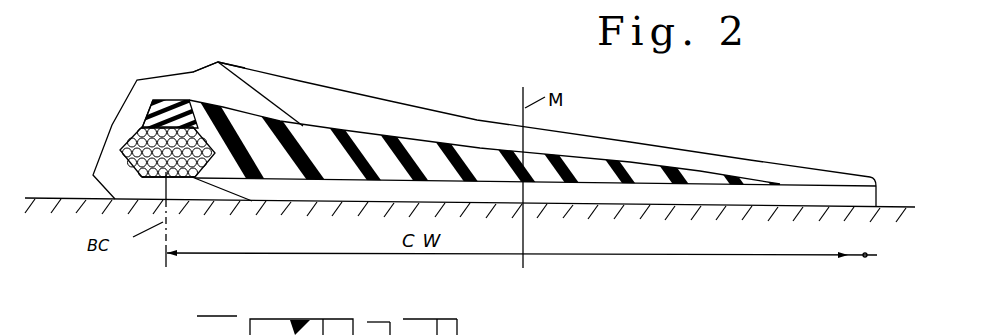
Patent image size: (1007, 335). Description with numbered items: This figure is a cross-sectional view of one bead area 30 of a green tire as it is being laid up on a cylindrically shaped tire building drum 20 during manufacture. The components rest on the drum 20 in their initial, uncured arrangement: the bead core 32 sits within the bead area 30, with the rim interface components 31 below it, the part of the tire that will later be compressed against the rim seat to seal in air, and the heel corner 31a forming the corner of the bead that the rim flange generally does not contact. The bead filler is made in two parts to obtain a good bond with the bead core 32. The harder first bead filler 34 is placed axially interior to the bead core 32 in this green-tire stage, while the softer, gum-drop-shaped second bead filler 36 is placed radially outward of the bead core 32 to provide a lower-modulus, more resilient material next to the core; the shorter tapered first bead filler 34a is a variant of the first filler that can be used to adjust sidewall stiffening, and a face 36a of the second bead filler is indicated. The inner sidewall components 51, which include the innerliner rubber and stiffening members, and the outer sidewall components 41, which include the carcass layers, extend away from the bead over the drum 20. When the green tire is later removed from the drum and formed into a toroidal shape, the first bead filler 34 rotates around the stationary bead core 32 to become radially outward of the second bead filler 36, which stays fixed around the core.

The building drum 20 is at (470, 204).
The bead area 30 is at (484, 111).
The rim interface components 31 is at (123, 136).
The heel corner 31a is at (218, 62).
The bead core 32 is at (532, 114).
The first bead filler 34 is at (557, 168).
The shorter tapered first bead filler 34a is at (173, 180).
The second bead filler 36 is at (221, 90).
The wedge face 36a is at (140, 128).
The outer sidewall components 41 is at (435, 110).
The inner sidewall components 51 is at (682, 209).